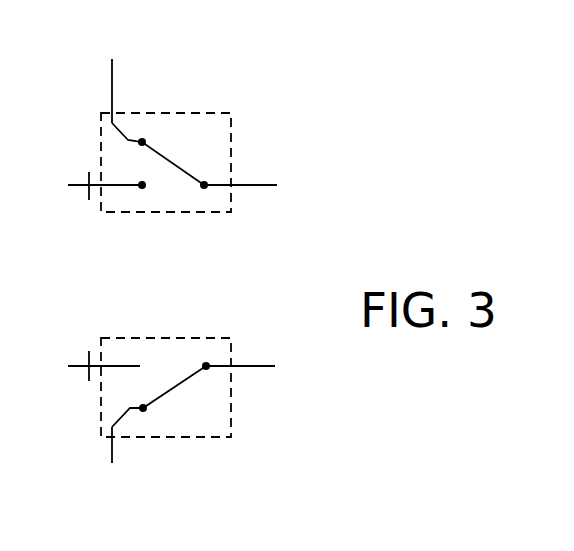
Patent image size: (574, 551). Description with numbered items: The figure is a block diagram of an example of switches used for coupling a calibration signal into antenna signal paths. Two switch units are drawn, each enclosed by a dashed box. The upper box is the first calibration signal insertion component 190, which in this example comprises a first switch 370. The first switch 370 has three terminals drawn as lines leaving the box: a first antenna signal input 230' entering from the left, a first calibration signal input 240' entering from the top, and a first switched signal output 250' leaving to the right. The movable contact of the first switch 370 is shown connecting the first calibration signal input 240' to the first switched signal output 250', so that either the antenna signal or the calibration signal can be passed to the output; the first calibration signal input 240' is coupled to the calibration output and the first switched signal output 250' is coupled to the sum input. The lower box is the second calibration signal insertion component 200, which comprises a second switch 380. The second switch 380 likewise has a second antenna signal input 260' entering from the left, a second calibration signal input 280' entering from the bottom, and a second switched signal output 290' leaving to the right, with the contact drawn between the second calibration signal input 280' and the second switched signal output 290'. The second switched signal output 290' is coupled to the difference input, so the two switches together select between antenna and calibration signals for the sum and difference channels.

The first calibration signal insertion component 190 is at (192, 112).
The second calibration signal insertion component 200 is at (146, 337).
The first calibration signal input 240' is at (142, 82).
The first antenna signal input 230' is at (86, 210).
The first switched signal output 250' is at (240, 223).
The first switch 370 is at (170, 178).
The second switch 380 is at (182, 402).
The second antenna signal input 260' is at (85, 339).
The second calibration signal input 280' is at (139, 475).
The second switched signal output 290' is at (240, 423).